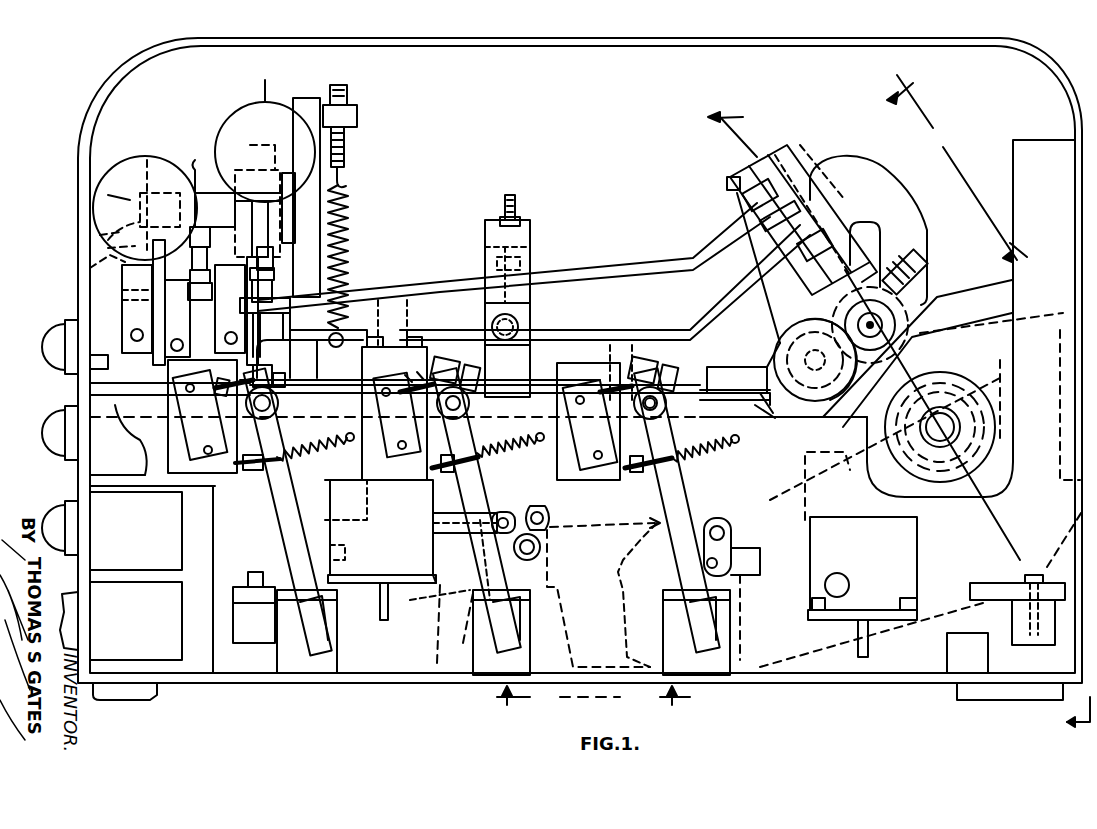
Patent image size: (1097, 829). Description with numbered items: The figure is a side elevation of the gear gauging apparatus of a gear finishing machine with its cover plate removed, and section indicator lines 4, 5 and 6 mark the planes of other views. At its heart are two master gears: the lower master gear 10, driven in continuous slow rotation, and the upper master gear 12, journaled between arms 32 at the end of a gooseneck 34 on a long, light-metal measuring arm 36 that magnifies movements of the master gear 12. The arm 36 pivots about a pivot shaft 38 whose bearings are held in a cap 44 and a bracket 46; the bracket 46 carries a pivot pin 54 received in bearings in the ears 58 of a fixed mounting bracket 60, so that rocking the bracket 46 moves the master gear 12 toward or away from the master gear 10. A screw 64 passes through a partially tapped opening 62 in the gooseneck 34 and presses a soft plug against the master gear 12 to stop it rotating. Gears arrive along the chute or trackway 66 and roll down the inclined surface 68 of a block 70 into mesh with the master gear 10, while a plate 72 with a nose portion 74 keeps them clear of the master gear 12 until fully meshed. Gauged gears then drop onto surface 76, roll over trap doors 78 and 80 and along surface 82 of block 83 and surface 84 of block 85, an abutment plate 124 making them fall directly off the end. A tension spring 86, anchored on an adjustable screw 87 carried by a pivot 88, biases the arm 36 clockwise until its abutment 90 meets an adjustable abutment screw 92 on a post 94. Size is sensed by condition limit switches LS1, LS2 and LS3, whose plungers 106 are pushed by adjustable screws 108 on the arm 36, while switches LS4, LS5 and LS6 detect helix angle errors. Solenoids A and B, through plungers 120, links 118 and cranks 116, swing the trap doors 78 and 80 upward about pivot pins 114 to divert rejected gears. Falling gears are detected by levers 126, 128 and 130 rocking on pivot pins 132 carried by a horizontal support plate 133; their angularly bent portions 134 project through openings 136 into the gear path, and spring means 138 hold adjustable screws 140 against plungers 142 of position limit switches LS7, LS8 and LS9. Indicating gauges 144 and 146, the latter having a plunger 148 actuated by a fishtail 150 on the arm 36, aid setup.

The master gear 10 is at (960, 380).
The master gear 12 is at (932, 415).
The arms 32 is at (959, 318).
The gooseneck 34 is at (902, 190).
The measuring or gauging arm 36 is at (440, 280).
The pivot shaft 38 is at (815, 160).
The cap 44 is at (792, 150).
The bracket 46 is at (830, 215).
The pivot pin 54 is at (815, 360).
The ears 58 is at (775, 345).
The fixed mounting bracket 60 is at (735, 360).
The partially tapped opening 62 is at (930, 225).
The screw 64 is at (922, 260).
The chute or trackway 66 is at (1055, 340).
The surface 68 is at (1030, 425).
The block 70 is at (925, 625).
The plate 72 is at (968, 306).
The nose portion 74 is at (920, 330).
The surface 76 is at (855, 480).
The trap door 78 is at (755, 520).
The trap door 80 is at (590, 525).
The surface 82 is at (710, 516).
The block 83 is at (618, 590).
The surface 84 is at (432, 518).
The block 85 is at (380, 615).
The tension spring 86 is at (348, 225).
The adjustable screw 87 is at (345, 150).
The pivot 88 is at (302, 98).
The abutment 90 is at (521, 262).
The adjustable abutment screw 92 is at (520, 235).
The post 94 is at (530, 312).
The plungers 106 is at (275, 255).
The adjustable screws 108 is at (280, 298).
The pivot pins 114 is at (542, 548).
The cranks 116 is at (546, 516).
The links 118 is at (510, 512).
The plungers 120 is at (464, 512).
The abutment plate 124 is at (365, 478).
The lever 126 is at (275, 516).
The lever 128 is at (494, 492).
The lever 130 is at (682, 492).
The pivot pins 132 is at (658, 405).
The horizontal support plate 133 is at (478, 420).
The angularly bent portions 134 is at (755, 612).
The openings 136 is at (696, 632).
The spring means 138 is at (698, 445).
The adjustable screws 140 is at (634, 365).
The plungers 142 is at (605, 365).
The indicating gauge 144 is at (262, 98).
The indicating gauge 146 is at (108, 195).
The plunger 148 is at (100, 238).
The fishtail 150 is at (90, 268).
The condition limit switch LS1 is at (146, 168).
The condition limit switch LS2 is at (181, 252).
The condition limit switch LS3 is at (265, 179).
The condition limit switch LS4 is at (137, 309).
The condition limit switch LS5 is at (187, 302).
The condition limit switch LS6 is at (243, 306).
The position limit switch LS7 is at (583, 378).
The position limit switch LS8 is at (362, 428).
The position limit switch LS9 is at (168, 403).
The solenoid A is at (917, 570).
The solenoid B is at (435, 555).
The section line 4- 4 is at (949, 175).
The section line 5- 5 is at (593, 707).
The section line 6- 6 is at (720, 132).